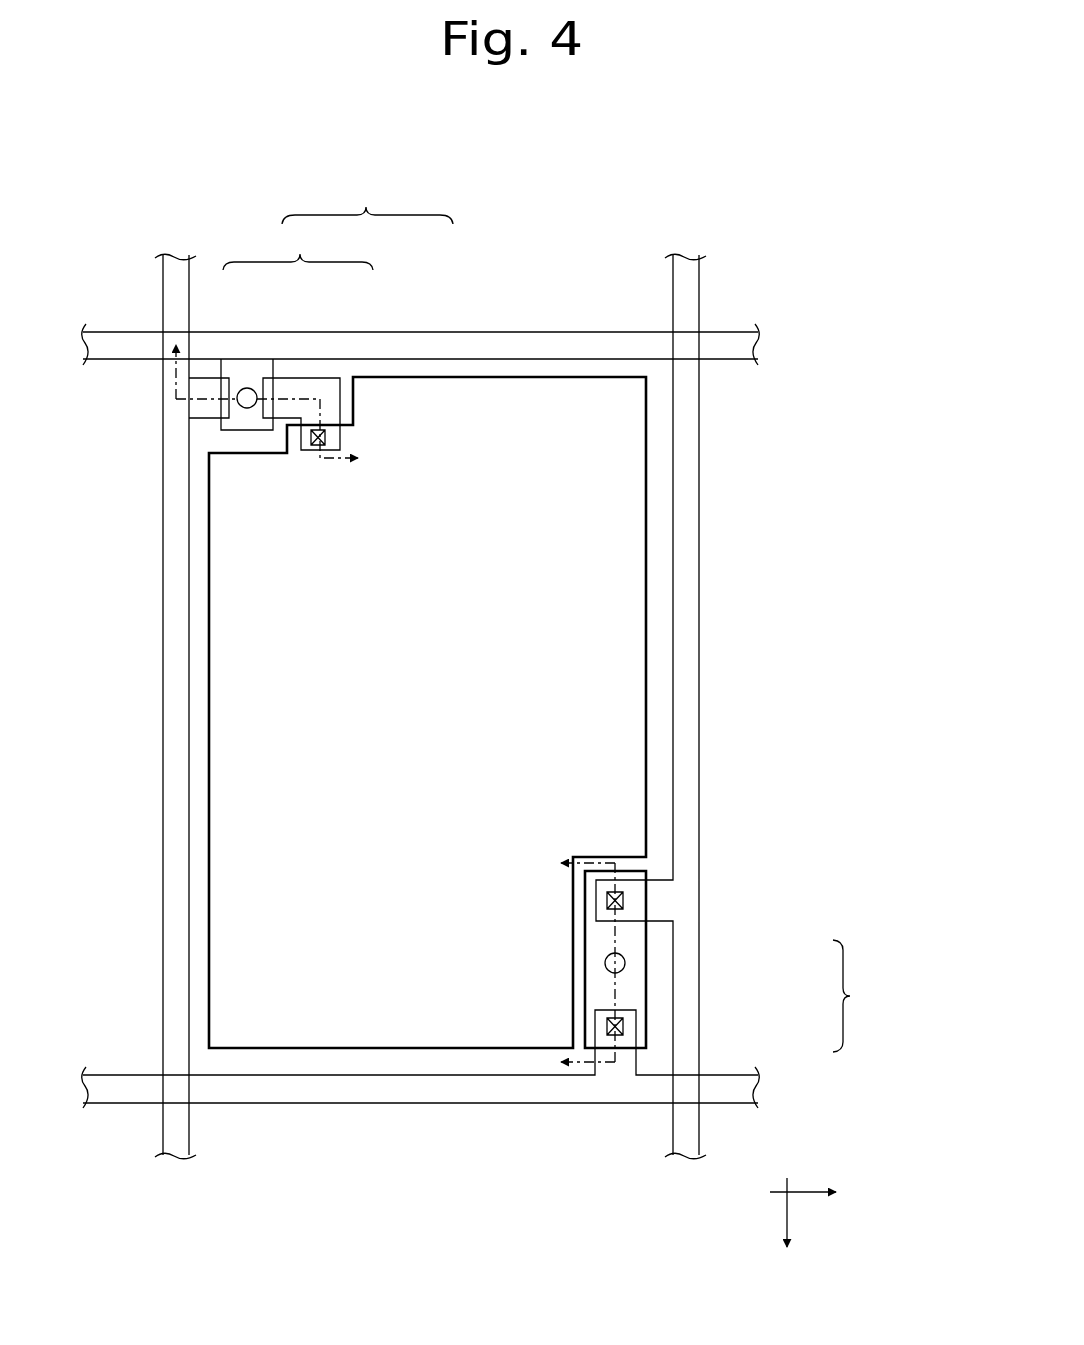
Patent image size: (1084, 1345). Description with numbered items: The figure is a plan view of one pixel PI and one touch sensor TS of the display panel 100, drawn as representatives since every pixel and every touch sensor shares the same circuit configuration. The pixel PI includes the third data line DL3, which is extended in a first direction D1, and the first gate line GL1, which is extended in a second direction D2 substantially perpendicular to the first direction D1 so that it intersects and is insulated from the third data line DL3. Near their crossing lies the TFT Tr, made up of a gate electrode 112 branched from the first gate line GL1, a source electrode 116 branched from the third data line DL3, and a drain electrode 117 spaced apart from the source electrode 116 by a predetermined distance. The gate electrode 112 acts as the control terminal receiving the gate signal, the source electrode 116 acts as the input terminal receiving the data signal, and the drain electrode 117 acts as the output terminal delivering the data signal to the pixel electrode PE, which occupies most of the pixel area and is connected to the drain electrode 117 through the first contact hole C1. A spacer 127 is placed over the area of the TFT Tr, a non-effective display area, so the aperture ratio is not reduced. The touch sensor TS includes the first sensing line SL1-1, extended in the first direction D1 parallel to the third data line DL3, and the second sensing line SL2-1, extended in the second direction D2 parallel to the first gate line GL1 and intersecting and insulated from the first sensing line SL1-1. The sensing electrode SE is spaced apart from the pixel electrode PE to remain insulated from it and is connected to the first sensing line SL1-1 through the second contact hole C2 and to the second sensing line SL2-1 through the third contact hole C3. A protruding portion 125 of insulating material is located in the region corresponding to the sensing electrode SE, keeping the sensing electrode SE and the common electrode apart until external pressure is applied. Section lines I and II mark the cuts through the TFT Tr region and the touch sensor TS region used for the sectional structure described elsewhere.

The display panel 100 is at (796, 175).
The third data line DL3 is at (163, 283).
The first gate line GL1 is at (118, 359).
The first sensing line SL1-1 is at (699, 995).
The second sensing line SL2-1 is at (722, 1075).
The gate electrode 112 is at (274, 372).
The source electrode 116 is at (229, 389).
The drain electrode 117 is at (318, 377).
The spacer 127 is at (247, 408).
The protruding portion 125 is at (605, 963).
The first contact hole C1 is at (312, 458).
The second contact hole C2 is at (600, 900).
The third contact hole C3 is at (600, 1026).
The pixel electrode PE is at (450, 377).
The sensing electrode SE is at (647, 955).
The TFT Tr is at (298, 246).
The pixel PI is at (367, 200).
The touch sensor TS is at (888, 996).
The section line I-I' I is at (280, 390).
The section line II-II' II is at (568, 964).
The first direction D1 is at (786, 1233).
The second direction D2 is at (825, 1190).